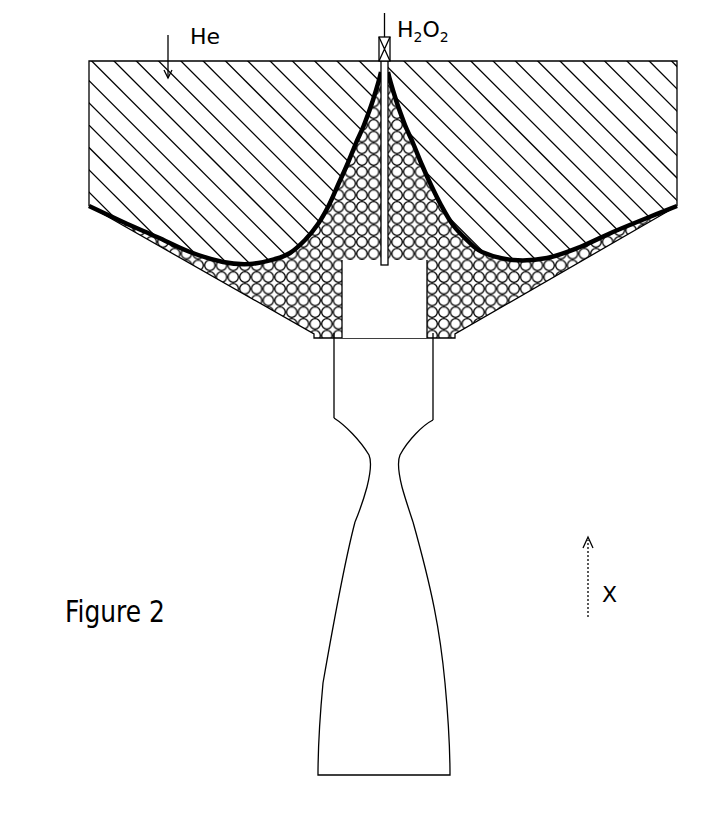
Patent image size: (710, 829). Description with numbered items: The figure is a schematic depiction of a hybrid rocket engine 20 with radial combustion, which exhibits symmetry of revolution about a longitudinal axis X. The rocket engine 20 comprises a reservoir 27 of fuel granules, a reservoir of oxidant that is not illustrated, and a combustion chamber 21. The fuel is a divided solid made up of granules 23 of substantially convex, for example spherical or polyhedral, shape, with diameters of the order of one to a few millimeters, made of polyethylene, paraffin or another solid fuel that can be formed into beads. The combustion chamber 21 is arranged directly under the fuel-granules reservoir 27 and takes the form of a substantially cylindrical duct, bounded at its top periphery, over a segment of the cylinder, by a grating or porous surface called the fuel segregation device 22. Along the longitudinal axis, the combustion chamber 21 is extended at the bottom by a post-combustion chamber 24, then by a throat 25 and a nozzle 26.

The rocket engine 20 is at (553, 363).
The combustion chamber 21 is at (412, 283).
The fuel segregation device 22 is at (460, 227).
The granules 23 is at (420, 157).
The post-combustion chamber 24 is at (433, 420).
The throat 25 is at (387, 460).
The nozzle 26 is at (428, 580).
The reservoir of fuel granules 27 is at (257, 303).